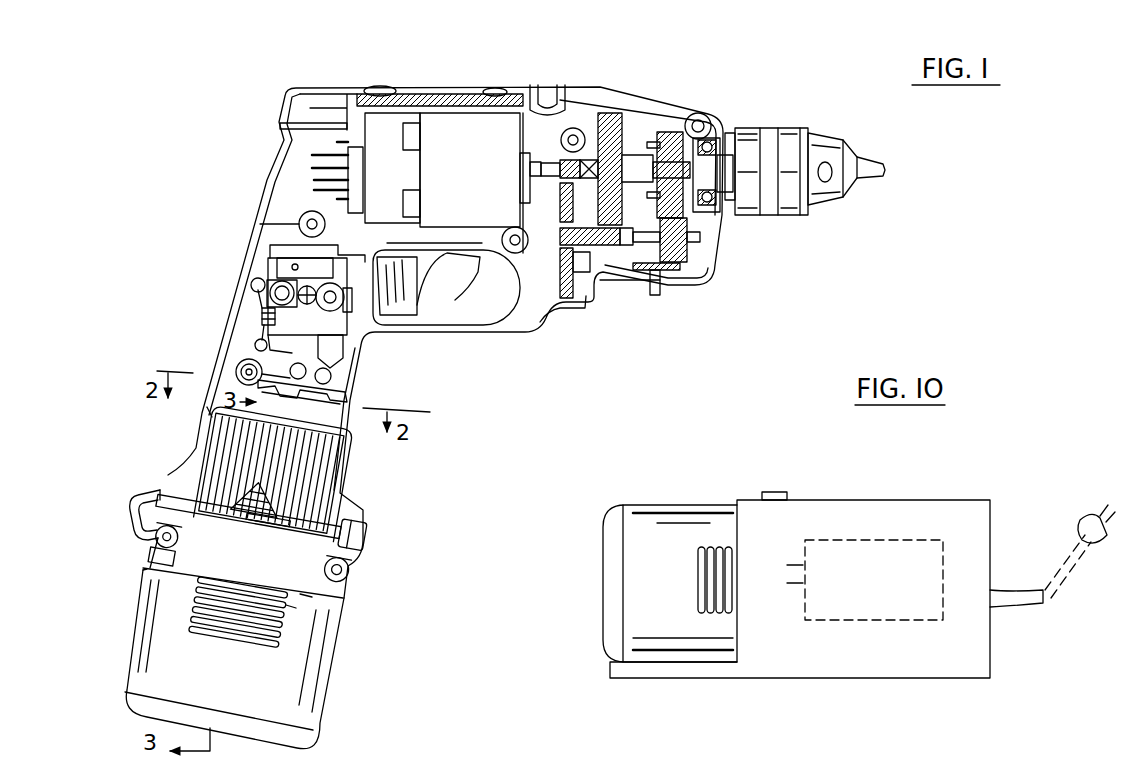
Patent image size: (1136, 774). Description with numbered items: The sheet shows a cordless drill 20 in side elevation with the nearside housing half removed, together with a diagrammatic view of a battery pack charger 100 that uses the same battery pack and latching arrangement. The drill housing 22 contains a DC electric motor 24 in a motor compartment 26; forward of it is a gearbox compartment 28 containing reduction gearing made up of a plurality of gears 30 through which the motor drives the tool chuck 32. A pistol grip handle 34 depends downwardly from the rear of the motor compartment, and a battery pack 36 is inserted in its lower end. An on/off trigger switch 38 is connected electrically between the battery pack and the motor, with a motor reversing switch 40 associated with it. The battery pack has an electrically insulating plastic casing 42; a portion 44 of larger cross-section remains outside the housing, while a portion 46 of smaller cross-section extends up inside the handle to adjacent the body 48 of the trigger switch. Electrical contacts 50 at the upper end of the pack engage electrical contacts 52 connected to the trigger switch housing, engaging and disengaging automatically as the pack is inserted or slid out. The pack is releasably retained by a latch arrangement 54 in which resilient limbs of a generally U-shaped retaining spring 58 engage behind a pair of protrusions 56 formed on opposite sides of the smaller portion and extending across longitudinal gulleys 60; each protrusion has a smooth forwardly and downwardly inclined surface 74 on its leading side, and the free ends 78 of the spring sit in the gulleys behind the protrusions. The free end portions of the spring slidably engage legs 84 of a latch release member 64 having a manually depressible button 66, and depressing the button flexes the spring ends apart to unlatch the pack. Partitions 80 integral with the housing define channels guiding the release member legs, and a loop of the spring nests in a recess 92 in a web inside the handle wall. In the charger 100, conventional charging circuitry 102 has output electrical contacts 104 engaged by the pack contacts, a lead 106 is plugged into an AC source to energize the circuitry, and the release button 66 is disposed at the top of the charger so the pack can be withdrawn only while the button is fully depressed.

In FIG. 1, the cordless drill 20 is at (589, 332).
In FIG. 1, the housing 22 is at (240, 253).
In FIG. 1, the DC electric motor 24 is at (450, 133).
In FIG. 1, the motor compartment 26 is at (403, 76).
In FIG. 1, the gearbox compartment 28 is at (670, 95).
In FIG. 1, the gears 30 is at (628, 200).
In FIG. 1, the tool chuck 32 is at (790, 135).
In FIG. 1, the pistol grip handle 34 is at (363, 370).
In FIG. 1, the battery pack 36 is at (352, 630).
In FIG. 10, the battery pack 36 is at (672, 495).
In FIG. 1, the on/off trigger switch 38 is at (400, 286).
In FIG. 1, the motor reversing switch 40 is at (470, 258).
In FIG. 1, the casing 42 is at (157, 585).
In FIG. 1, the portion of larger cross-section 44 is at (152, 668).
In FIG. 1, the portion of smaller cross-section 46 is at (213, 430).
In FIG. 1, the trigger-switch body 48 is at (263, 327).
In FIG. 1, the electrical contacts 50 is at (255, 385).
In FIG. 1, the electrical contacts 52 is at (263, 363).
In FIG. 1, the latch arrangement 54 is at (333, 507).
In FIG. 1, the protrusions 56 is at (220, 432).
In FIG. 1, the retaining spring 58 is at (152, 558).
In FIG. 1, the longitudinal gulleys 60 is at (285, 450).
In FIG. 1, the latch release member 64 is at (306, 598).
In FIG. 1, the manually depressible button 66 is at (368, 540).
In FIG. 10, the manually depressible button 66 is at (775, 490).
In FIG. 1, the inclined surface 74 is at (283, 492).
In FIG. 1, the free ends 78 is at (239, 568).
In FIG. 1, the partitions 80 is at (183, 500).
In FIG. 1, the legs 84 is at (290, 610).
In FIG. 1, the recess 92 is at (150, 485).
In FIG. 10, the battery pack charger 100 is at (1000, 530).
In FIG. 10, the charging circuitry 102 is at (880, 537).
In FIG. 10, the output electrical contacts 104 is at (803, 563).
In FIG. 10, the lead 106 is at (1030, 607).